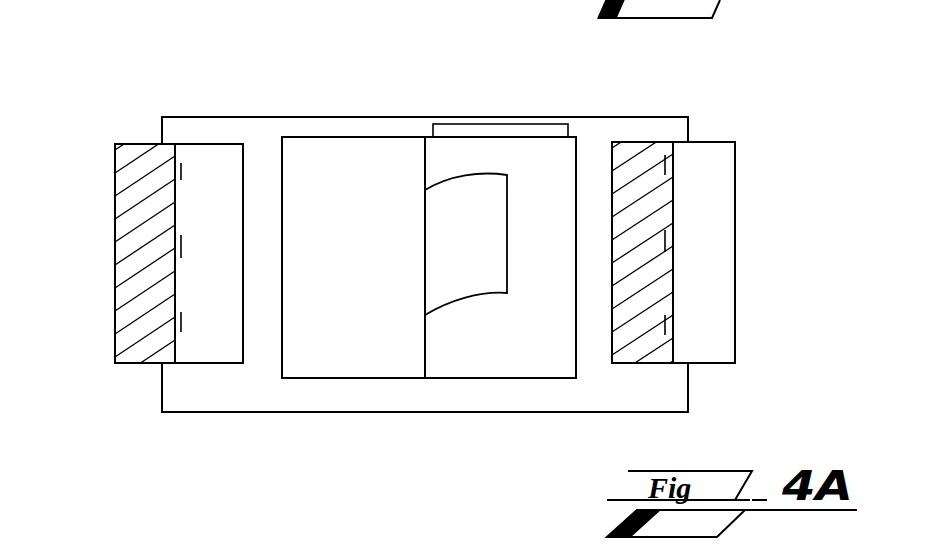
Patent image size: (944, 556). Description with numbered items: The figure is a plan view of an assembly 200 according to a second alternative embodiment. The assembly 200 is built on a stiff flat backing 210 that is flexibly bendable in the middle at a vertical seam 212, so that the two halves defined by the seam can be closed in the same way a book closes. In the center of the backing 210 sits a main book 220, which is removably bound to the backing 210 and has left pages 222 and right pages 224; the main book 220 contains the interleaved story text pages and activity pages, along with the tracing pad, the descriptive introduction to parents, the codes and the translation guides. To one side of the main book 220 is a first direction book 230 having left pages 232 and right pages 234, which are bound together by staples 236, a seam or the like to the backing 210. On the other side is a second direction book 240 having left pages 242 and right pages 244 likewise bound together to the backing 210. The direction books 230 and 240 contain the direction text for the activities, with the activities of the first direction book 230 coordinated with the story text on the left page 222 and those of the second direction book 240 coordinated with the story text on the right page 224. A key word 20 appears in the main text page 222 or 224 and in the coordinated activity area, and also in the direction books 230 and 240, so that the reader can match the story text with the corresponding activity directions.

The key word 20 is at (347, 320).
The assembly 200 is at (306, 102).
The stiff flat backing 210 is at (188, 108).
The vertical seam 212 is at (430, 126).
The main book 220 is at (397, 307).
The left pages 222 is at (302, 368).
The right pages 224 is at (563, 366).
The first direction book 230 is at (145, 252).
The left pages 232 is at (115, 222).
The right pages 234 is at (214, 365).
The staples 236 is at (181, 171).
The second direction book 240 is at (689, 260).
The left pages 242 is at (623, 364).
The right pages 244 is at (738, 310).